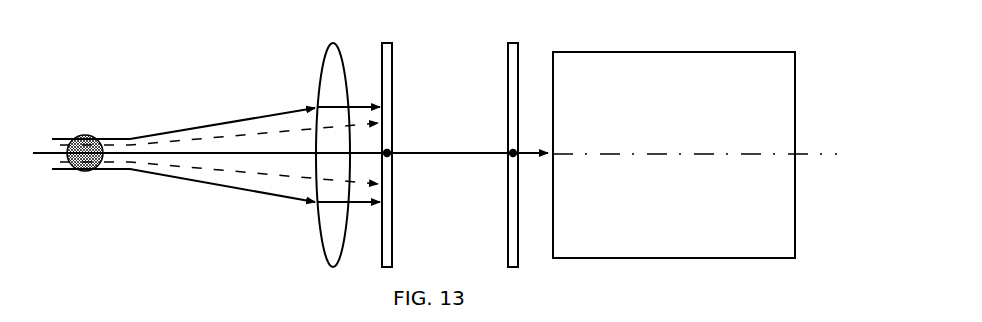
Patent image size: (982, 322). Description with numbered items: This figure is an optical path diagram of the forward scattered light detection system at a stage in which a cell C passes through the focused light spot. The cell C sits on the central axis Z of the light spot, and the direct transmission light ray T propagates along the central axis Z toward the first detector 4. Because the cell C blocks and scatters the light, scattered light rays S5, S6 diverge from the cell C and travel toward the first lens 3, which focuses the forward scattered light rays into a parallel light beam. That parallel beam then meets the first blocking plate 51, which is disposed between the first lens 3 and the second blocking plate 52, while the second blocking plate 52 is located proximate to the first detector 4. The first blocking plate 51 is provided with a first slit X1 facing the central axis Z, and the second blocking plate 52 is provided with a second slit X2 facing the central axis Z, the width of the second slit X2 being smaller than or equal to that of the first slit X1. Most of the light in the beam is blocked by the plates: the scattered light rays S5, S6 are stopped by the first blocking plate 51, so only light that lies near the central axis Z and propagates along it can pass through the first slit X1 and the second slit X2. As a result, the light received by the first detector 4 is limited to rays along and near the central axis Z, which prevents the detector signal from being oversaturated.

The central axis Z is at (42, 154).
The cell C is at (90, 170).
The scattered light ray S5 is at (250, 132).
The scattered light ray S6 is at (252, 172).
The first lens 3 is at (337, 63).
The first blocking plate 51 is at (392, 62).
The second blocking plate 52 is at (518, 60).
The first detector 4 is at (648, 73).
The first slit X1 is at (390, 152).
The second slit X2 is at (513, 152).
The direct transmission light ray T is at (452, 165).